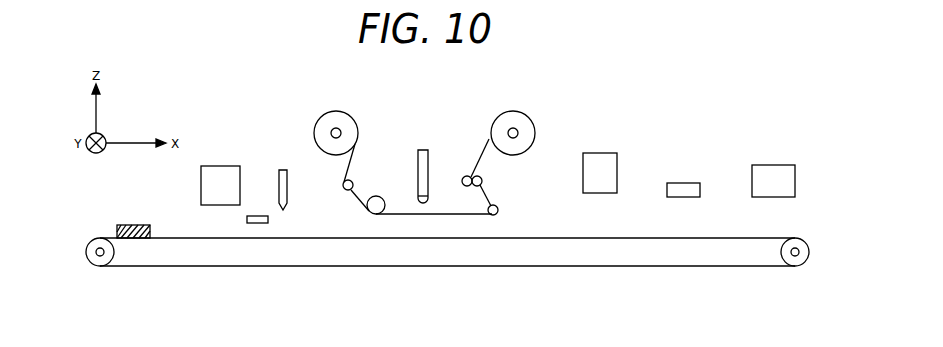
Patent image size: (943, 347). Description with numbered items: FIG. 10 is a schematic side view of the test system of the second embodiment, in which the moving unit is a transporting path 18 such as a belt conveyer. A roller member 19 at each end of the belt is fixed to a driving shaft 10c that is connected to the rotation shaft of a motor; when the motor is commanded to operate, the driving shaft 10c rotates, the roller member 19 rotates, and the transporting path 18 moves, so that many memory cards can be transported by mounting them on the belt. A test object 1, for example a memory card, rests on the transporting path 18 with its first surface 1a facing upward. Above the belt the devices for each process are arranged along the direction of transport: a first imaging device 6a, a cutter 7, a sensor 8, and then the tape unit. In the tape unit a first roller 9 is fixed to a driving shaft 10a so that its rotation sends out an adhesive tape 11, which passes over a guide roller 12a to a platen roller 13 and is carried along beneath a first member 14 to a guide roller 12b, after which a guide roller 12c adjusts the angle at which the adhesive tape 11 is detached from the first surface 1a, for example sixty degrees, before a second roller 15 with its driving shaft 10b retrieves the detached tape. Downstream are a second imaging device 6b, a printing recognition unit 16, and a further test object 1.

The test object 1 is at (453, 184).
The first surface 1a is at (127, 225).
The first imaging device 6a is at (222, 166).
The second imaging device 6b is at (598, 160).
The cutter 7 is at (281, 172).
The sensor 8 is at (256, 216).
The first roller 9 is at (328, 110).
The driving shaft 10a is at (340, 130).
The driving shaft 10b is at (517, 130).
The driving shaft 10c is at (90, 262).
The adhesive tape 11 is at (425, 214).
The guide roller 12a is at (352, 182).
The guide roller 12b is at (497, 206).
The guide roller 12c is at (465, 177).
The platen roller 13 is at (383, 198).
The first member 14 is at (428, 150).
The second roller 15 is at (495, 110).
The printing recognition unit 16 is at (685, 185).
The transporting path 18 is at (318, 260).
The roller member 19 is at (96, 251).